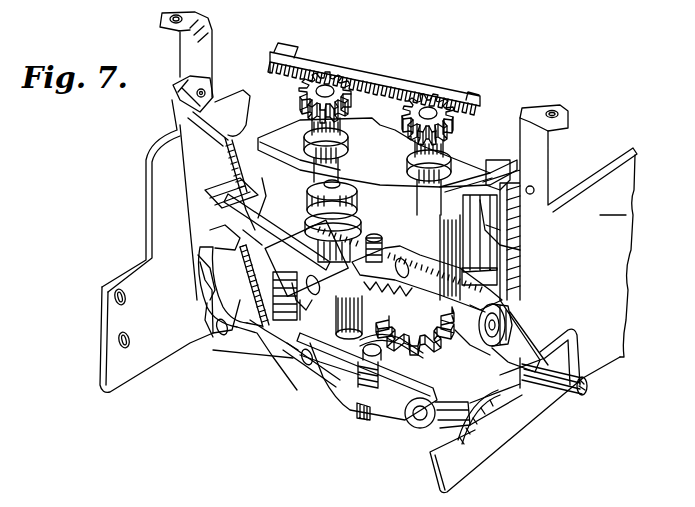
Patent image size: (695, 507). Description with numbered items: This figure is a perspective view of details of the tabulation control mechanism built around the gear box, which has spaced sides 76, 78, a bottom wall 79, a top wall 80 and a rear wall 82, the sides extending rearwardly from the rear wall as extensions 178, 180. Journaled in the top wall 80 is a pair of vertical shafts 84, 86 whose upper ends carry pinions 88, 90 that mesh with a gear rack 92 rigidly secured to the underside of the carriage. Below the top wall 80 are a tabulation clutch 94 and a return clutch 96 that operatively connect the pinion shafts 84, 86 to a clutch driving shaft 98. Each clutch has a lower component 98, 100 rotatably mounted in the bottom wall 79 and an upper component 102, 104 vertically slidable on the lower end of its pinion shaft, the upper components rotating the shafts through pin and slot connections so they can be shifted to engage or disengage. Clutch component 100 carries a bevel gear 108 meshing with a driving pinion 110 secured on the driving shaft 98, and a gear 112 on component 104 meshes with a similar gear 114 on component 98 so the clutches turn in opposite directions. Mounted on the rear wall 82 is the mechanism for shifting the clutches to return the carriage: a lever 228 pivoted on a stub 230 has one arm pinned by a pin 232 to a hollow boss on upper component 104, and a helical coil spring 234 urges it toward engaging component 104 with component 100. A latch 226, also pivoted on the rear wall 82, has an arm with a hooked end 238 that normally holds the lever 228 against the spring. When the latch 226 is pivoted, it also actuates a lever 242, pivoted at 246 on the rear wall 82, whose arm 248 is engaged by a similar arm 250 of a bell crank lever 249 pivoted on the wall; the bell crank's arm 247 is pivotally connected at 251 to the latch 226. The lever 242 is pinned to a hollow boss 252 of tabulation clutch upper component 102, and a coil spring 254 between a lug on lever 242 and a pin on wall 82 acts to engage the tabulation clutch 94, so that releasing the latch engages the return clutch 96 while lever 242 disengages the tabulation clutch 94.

The side 76 is at (228, 100).
The side 78 is at (626, 217).
The bottom wall 79 is at (338, 345).
The top wall 80 is at (486, 165).
The rear wall 82 is at (190, 172).
The vertical shaft 84 is at (342, 121).
The vertical shaft 86 is at (446, 148).
The pinion 88 is at (320, 80).
The pinion 90 is at (438, 95).
The gear rack 92 is at (378, 78).
The tabulation clutch 94 is at (291, 213).
The return clutch 96 is at (376, 190).
The clutch driving shaft 98 is at (364, 292).
The lower clutch component 100 is at (410, 346).
The upper clutch component 102 is at (372, 316).
The upper clutch component 104 is at (473, 250).
The bevel gear 108 is at (430, 372).
The driving pinion 110 is at (474, 345).
The gear 112 is at (470, 270).
The gear 114 is at (330, 365).
The rearward extension 178 is at (113, 387).
The rearward extension 180 is at (462, 478).
The latch 226 is at (330, 392).
The lever 228 is at (498, 340).
The stub 230 is at (500, 302).
The pin 232 is at (410, 272).
The helical coil spring 234 is at (380, 236).
The hooked end 238 is at (514, 396).
The lever 242 is at (263, 196).
The pivot 246 is at (217, 258).
The arm 247 is at (293, 360).
The arm 248 is at (213, 237).
The bell crank lever 249 is at (217, 350).
The arm 250 is at (205, 262).
The pivotal connection 251 is at (310, 358).
The hollow boss 252 is at (308, 234).
The coil spring 254 is at (272, 332).